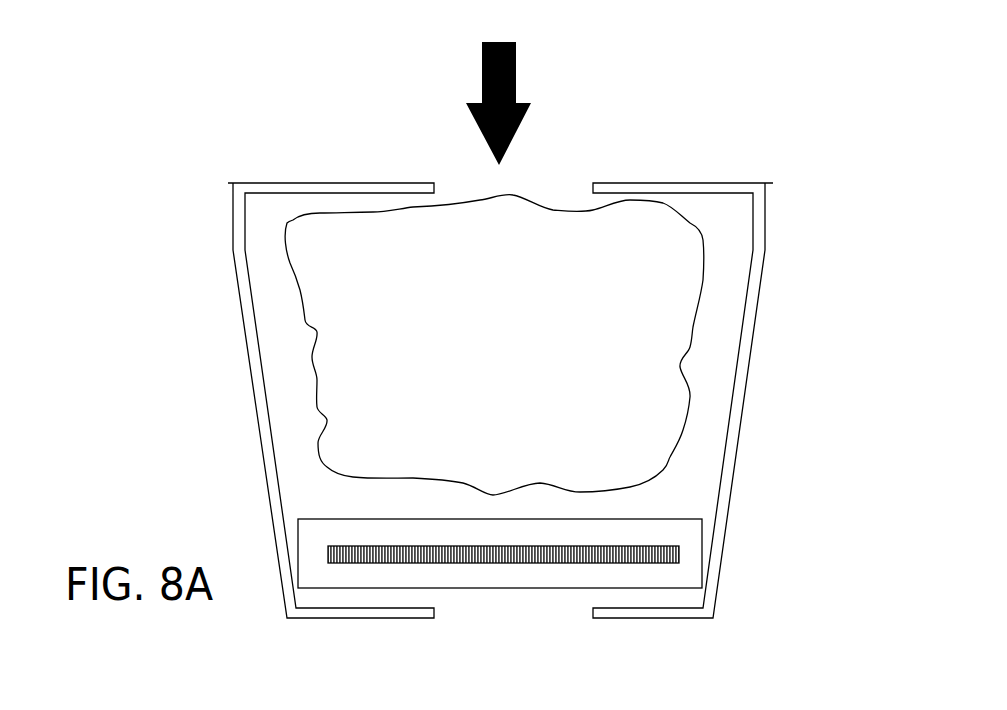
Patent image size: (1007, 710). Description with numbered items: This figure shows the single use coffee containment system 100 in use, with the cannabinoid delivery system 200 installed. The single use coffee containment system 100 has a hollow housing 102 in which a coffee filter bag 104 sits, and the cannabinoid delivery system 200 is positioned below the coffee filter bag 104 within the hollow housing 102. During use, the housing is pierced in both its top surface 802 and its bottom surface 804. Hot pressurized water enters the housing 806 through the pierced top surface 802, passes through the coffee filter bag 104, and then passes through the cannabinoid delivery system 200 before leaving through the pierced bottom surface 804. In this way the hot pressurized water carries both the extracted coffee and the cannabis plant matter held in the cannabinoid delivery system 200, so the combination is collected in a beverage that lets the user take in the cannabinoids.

The single use coffee containment system 100 is at (146, 159).
The hollow housing 102 is at (765, 242).
The coffee filter bag 104 is at (665, 407).
The cannabinoid delivery system 200 is at (716, 531).
The top surface 802 is at (587, 180).
The bottom surface 804 is at (582, 620).
The hot pressurized water entering the housing 806 is at (517, 70).